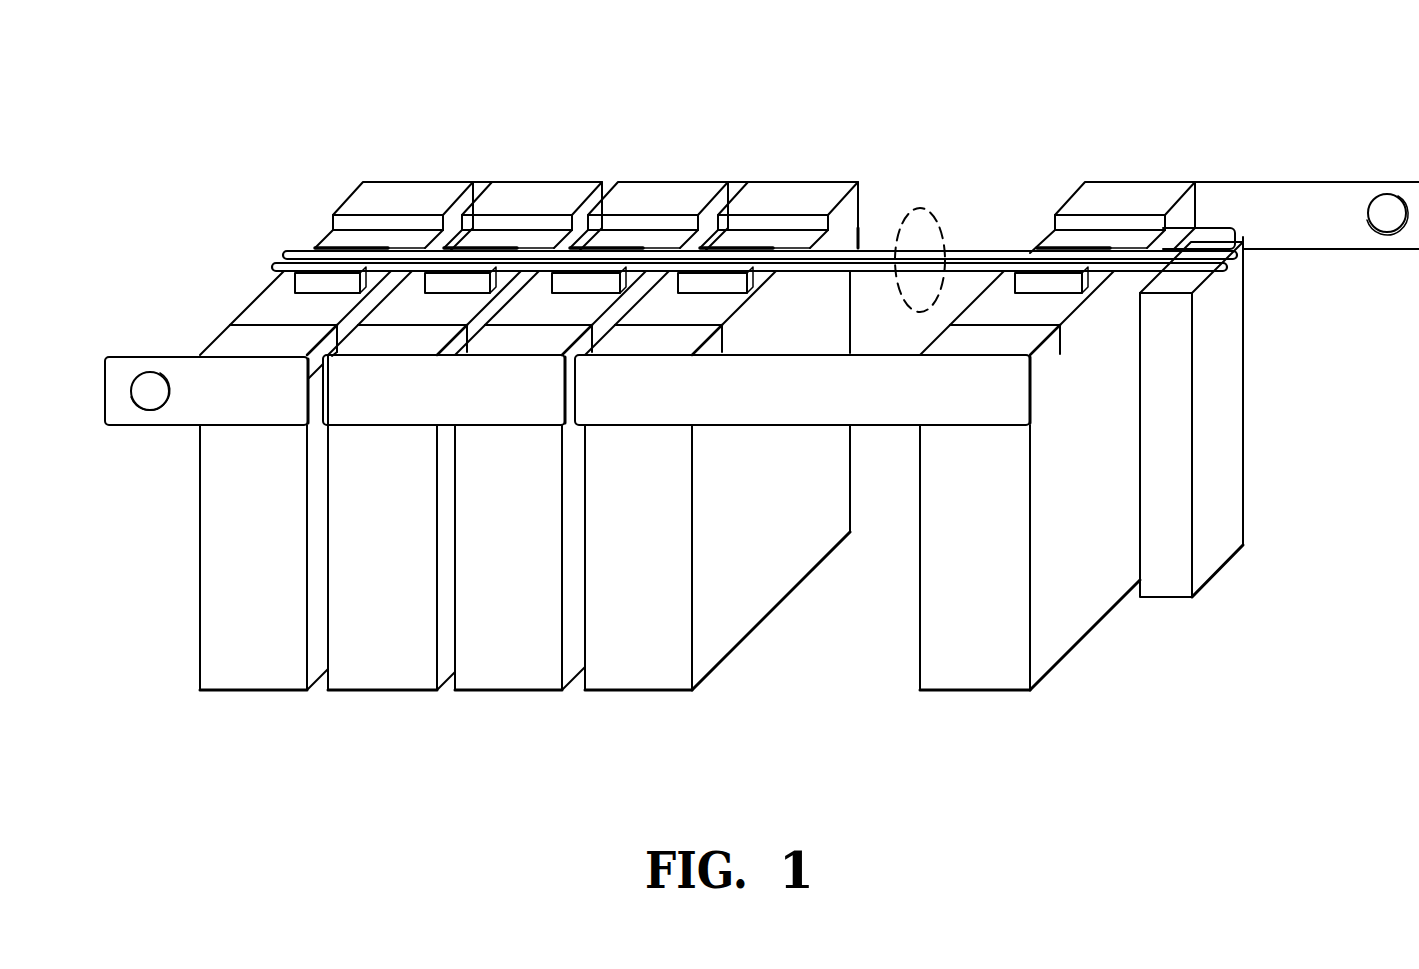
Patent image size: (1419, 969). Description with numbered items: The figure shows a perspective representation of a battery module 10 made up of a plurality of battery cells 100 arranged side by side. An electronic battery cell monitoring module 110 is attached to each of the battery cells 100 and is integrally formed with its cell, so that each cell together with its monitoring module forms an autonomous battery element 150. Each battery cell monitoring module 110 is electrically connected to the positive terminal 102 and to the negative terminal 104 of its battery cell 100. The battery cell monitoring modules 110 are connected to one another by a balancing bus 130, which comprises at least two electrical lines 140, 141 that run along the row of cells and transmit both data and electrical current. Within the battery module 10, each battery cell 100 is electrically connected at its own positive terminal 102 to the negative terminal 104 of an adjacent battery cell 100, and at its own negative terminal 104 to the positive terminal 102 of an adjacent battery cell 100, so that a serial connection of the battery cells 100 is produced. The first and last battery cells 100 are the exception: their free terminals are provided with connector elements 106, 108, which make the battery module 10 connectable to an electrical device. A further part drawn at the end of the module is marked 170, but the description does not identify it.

The battery module 10 is at (821, 37).
The battery cell 100 is at (273, 312).
The positive terminal 102 is at (373, 198).
The negative terminal 104 is at (220, 345).
The connector element 106 is at (1350, 218).
The connector element 108 is at (202, 389).
The electronic battery cell monitoring module 110 is at (310, 283).
The balancing bus 130 is at (930, 208).
The electrical line 140 is at (1192, 293).
The electrical line 141 is at (1162, 262).
The autonomous battery element 150 is at (237, 608).
The end plate side wall 170 is at (1218, 523).